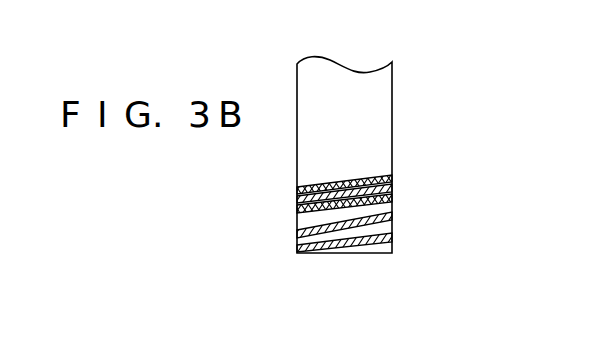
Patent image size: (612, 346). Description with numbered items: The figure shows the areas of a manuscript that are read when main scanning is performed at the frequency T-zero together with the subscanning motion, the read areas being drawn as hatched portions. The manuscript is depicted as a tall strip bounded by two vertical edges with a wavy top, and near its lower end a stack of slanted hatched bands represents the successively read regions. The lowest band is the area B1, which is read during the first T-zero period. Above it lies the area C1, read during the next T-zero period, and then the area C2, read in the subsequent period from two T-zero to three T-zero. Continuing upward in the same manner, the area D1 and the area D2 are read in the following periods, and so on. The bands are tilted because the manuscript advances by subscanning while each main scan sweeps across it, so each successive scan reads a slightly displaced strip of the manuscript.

The area D2 is at (297, 190).
The area D1 is at (297, 199).
The area C2 is at (297, 209).
The area C1 is at (297, 234).
The area B1 is at (297, 249).